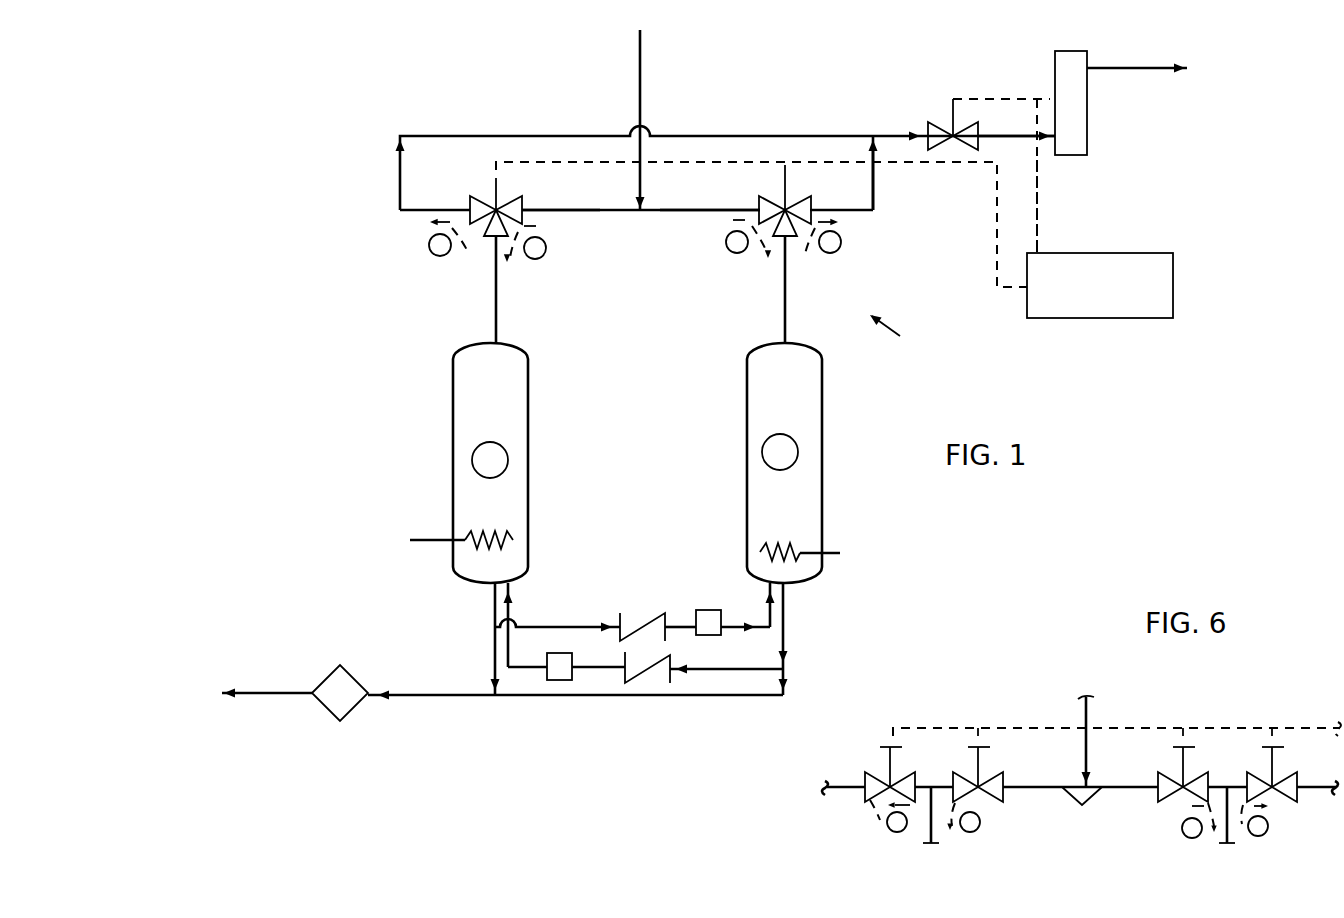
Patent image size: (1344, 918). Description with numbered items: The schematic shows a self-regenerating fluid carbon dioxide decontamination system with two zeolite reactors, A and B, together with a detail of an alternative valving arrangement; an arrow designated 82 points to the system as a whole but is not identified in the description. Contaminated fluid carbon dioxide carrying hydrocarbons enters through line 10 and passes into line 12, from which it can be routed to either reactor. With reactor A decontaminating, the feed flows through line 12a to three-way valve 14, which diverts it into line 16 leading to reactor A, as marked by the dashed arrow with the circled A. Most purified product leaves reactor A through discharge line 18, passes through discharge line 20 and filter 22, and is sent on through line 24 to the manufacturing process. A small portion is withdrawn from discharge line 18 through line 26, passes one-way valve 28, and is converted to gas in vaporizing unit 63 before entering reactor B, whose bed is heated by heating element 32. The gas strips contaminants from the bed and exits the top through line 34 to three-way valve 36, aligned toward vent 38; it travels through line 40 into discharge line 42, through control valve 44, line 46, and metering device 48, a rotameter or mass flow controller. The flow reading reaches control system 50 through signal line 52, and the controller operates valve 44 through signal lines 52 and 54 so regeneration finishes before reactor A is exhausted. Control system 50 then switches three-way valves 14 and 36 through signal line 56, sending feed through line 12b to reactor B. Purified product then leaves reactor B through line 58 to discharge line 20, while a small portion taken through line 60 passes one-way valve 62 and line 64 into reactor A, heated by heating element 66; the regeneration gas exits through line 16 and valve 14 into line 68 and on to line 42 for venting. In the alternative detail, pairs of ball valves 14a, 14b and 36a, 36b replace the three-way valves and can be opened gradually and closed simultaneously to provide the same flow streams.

In FIG. 1, the line 10 is at (638, 78).
In FIG. 6, the line 10 is at (1088, 750).
In FIG. 1, the line 12 is at (661, 211).
In FIG. 6, the line 12 is at (1082, 810).
In FIG. 1, the line 12a is at (590, 211).
In FIG. 1, the line 12b is at (686, 211).
In FIG. 1, the three-way valve 14 is at (520, 208).
In FIG. 6, the ball valve 14a is at (878, 800).
In FIG. 6, the ball valve 14b is at (988, 800).
In FIG. 1, the line 16 is at (494, 312).
In FIG. 6, the line 16 is at (933, 830).
In FIG. 1, the discharge line 18 is at (492, 644).
In FIG. 1, the discharge line 20 is at (440, 698).
In FIG. 1, the filter 22 is at (323, 711).
In FIG. 1, the line 24 is at (270, 690).
In FIG. 1, the line 26 is at (543, 625).
In FIG. 1, the one-way valve 28 is at (650, 600).
In FIG. 1, the heating element 32 is at (790, 548).
In FIG. 1, the line 34 is at (790, 307).
In FIG. 6, the line 34 is at (1225, 845).
In FIG. 1, the three-way valve 36 is at (810, 208).
In FIG. 6, the ball valve 36a is at (1165, 800).
In FIG. 6, the ball valve 36b is at (1285, 800).
In FIG. 1, the vent 38 is at (1125, 63).
In FIG. 1, the line 40 is at (873, 187).
In FIG. 1, the discharge line 42 is at (712, 135).
In FIG. 1, the control valve 44 is at (963, 150).
In FIG. 1, the line 46 is at (1020, 145).
In FIG. 1, the metering device 48 is at (1075, 110).
In FIG. 1, the control system 50 is at (1173, 268).
In FIG. 1, the signal line 52 is at (1037, 228).
In FIG. 1, the signal line 54 is at (968, 98).
In FIG. 1, the signal line 56 is at (703, 166).
In FIG. 6, the signal line 56 is at (1130, 730).
In FIG. 1, the line 58 is at (786, 636).
In FIG. 1, the line 60 is at (727, 672).
In FIG. 1, the one-way valve 62 is at (623, 672).
In FIG. 1, the vaporizing unit 63 is at (562, 653).
In FIG. 1, the line 64 is at (522, 668).
In FIG. 1, the heating element 66 is at (430, 538).
In FIG. 1, the line 68 is at (400, 188).
In FIG. 1, the adsorption system 82 is at (902, 335).